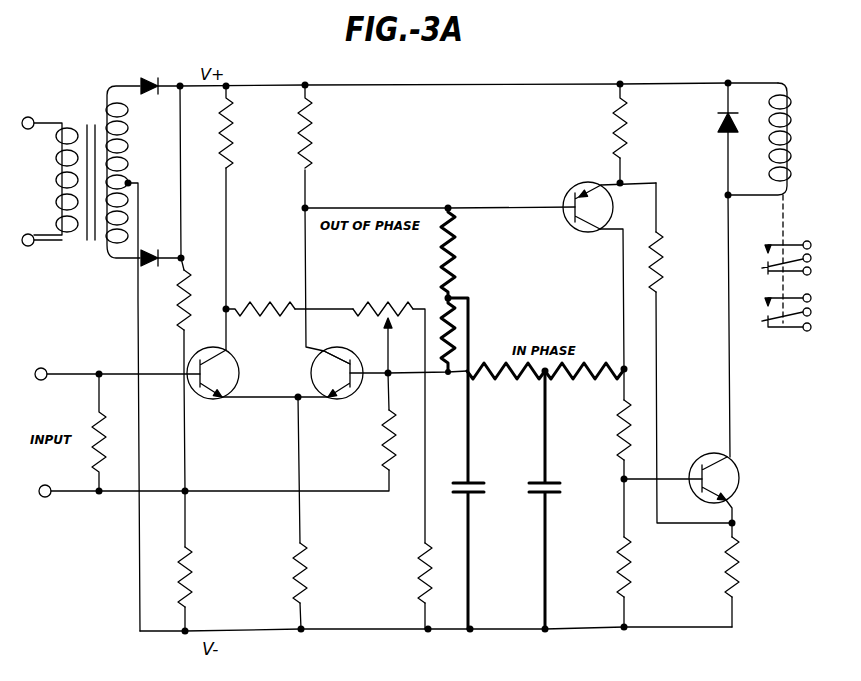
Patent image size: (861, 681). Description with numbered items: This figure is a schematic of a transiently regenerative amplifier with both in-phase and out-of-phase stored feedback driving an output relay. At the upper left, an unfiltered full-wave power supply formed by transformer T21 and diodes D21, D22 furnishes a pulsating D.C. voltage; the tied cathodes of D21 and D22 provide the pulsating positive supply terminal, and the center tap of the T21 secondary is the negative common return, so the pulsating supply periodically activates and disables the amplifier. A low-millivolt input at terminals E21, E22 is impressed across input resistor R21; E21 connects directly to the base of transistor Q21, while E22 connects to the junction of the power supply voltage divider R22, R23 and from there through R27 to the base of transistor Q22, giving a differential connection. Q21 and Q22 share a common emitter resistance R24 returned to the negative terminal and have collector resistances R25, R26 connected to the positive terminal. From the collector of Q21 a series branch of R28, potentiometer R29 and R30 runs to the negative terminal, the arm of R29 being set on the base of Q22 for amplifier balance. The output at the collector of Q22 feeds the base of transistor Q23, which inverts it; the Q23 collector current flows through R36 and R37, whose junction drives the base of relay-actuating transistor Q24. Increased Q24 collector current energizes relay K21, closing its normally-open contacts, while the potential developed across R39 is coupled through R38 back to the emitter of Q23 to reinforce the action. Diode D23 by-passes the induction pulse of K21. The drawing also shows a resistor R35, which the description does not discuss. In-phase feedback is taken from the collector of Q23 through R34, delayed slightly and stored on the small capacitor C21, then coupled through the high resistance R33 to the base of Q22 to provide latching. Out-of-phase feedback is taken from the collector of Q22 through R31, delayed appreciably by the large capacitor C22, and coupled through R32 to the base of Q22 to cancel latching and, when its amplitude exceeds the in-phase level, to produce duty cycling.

The power transformer T21 is at (81, 169).
The rectifier diode D21 is at (154, 80).
The rectifier diode D22 is at (164, 246).
The diode D23 is at (724, 128).
The output relay K21 is at (790, 122).
The input resistor R21 is at (99, 415).
The power supply voltage divider resistor R22 is at (178, 298).
The power supply voltage divider resistor R23 is at (192, 553).
The common emitter resistance R24 is at (307, 553).
The collector resistance R25 is at (230, 104).
The collector resistance R26 is at (309, 103).
The resistor R27 is at (384, 430).
The resistor R28 is at (284, 306).
The potentiometer R29 is at (378, 306).
The resistor R30 is at (422, 556).
The feedback resistor R31 is at (457, 248).
The feedback resistor R32 is at (440, 308).
The feedback resistor R33 is at (485, 384).
The feedback resistor R34 is at (561, 384).
The resistor R35 is at (632, 106).
The collector return resistor R36 is at (618, 450).
The collector return resistor R37 is at (618, 558).
The resistor R38 is at (664, 239).
The resistor R39 is at (742, 560).
The storage capacitor C21 is at (540, 494).
The storage capacitor C22 is at (476, 482).
The transistor Q21 is at (229, 373).
The transistor Q22 is at (324, 373).
The transistor Q23 is at (583, 198).
The relay-actuating transistor Q24 is at (712, 466).
The input terminal E21 is at (45, 368).
The input terminal E22 is at (41, 497).